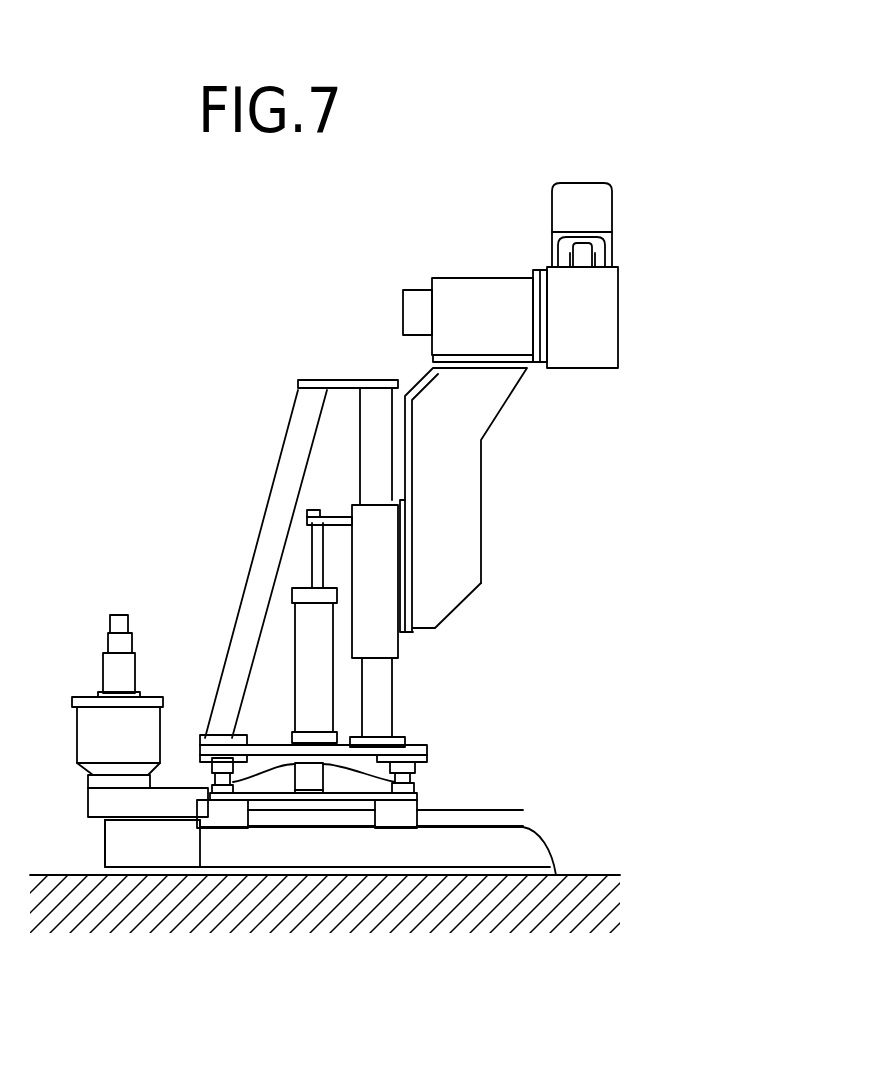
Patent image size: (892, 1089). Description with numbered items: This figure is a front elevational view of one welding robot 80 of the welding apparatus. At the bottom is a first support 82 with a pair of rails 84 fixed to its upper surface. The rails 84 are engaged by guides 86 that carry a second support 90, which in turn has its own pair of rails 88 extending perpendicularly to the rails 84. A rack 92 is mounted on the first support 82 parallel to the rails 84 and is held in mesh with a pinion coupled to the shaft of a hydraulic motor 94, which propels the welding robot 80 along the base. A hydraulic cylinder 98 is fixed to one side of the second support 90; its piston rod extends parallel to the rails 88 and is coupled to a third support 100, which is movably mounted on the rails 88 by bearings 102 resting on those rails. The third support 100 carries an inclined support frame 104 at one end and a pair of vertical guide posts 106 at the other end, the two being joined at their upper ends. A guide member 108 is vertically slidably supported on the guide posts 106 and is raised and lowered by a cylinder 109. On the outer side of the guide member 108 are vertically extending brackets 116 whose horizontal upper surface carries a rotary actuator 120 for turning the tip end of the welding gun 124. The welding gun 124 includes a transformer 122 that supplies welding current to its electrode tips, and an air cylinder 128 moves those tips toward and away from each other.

The welding robot 80 is at (490, 557).
The first support 82 is at (530, 848).
The rails 84 is at (487, 817).
The guides 86 is at (222, 828).
The rails 88 is at (413, 780).
The second support 90 is at (340, 795).
The rack 92 is at (150, 825).
The hydraulic motor 94 is at (103, 735).
The hydraulic cylinder 98 is at (290, 773).
The third support 100 is at (265, 500).
The bearings 102 is at (223, 740).
The support frame 104 is at (295, 437).
The vertical guide posts 106 is at (380, 455).
The guide member 108 is at (385, 538).
The cylinder 109 is at (307, 630).
The bracket 116 is at (442, 598).
The rotary actuator 120 is at (473, 288).
The transformer 122 is at (595, 343).
The welding gun 124 is at (620, 207).
The air cylinder 128 is at (568, 198).